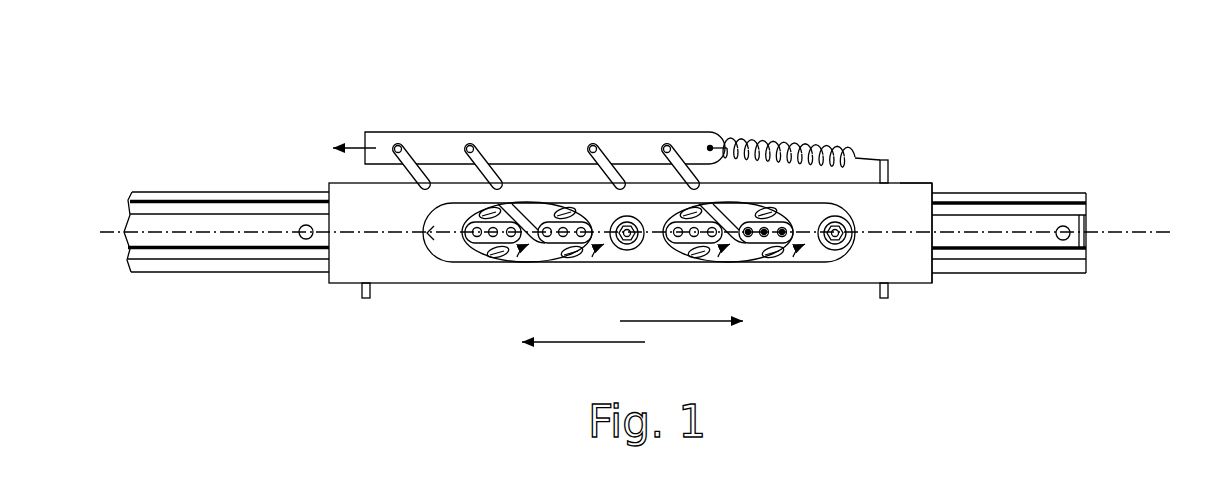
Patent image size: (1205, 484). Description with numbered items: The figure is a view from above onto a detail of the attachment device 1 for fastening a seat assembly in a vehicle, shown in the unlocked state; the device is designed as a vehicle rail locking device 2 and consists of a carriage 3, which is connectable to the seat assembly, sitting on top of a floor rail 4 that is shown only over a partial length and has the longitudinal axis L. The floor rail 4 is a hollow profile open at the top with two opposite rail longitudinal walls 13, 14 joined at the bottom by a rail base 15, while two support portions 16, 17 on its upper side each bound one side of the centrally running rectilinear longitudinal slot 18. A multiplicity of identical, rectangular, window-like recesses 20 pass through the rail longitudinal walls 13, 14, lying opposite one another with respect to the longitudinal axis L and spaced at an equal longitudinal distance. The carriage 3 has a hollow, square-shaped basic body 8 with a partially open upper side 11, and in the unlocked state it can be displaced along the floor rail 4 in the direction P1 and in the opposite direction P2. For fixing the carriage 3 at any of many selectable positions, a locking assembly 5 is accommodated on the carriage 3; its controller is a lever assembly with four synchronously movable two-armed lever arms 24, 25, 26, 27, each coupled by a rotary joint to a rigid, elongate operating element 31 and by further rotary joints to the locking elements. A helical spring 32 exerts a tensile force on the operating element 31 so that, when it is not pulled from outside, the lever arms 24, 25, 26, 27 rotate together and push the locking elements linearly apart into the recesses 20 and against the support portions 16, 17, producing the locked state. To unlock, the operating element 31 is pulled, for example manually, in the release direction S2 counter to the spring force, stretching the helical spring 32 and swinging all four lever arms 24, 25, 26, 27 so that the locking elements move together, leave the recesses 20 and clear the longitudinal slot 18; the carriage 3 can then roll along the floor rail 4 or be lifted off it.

The attachment device 1 is at (1090, 140).
The vehicle rail locking device 2 is at (223, 203).
The carriage 3 is at (421, 296).
The floor rail 4 is at (1030, 233).
The locking assembly 5 is at (882, 115).
The basic body 8 is at (917, 180).
The upper side 11 is at (903, 226).
The rail longitudinal wall 13 is at (280, 273).
The rail longitudinal wall 14 is at (246, 191).
The rail base 15 is at (998, 245).
The support portion 16 is at (168, 205).
The support portion 17 is at (240, 258).
The longitudinal slot 18 is at (200, 238).
The window-like recess 20 is at (1003, 190).
The lever arm 24 is at (682, 145).
The lever arm 25 is at (607, 145).
The lever arm 26 is at (485, 145).
The lever arm 27 is at (413, 145).
The operating element 31 is at (648, 140).
The helical spring 32 is at (796, 143).
The longitudinal axis L is at (1130, 233).
The release direction S2 is at (351, 140).
The displacement direction P1 is at (578, 345).
The opposite displacement direction P2 is at (680, 324).